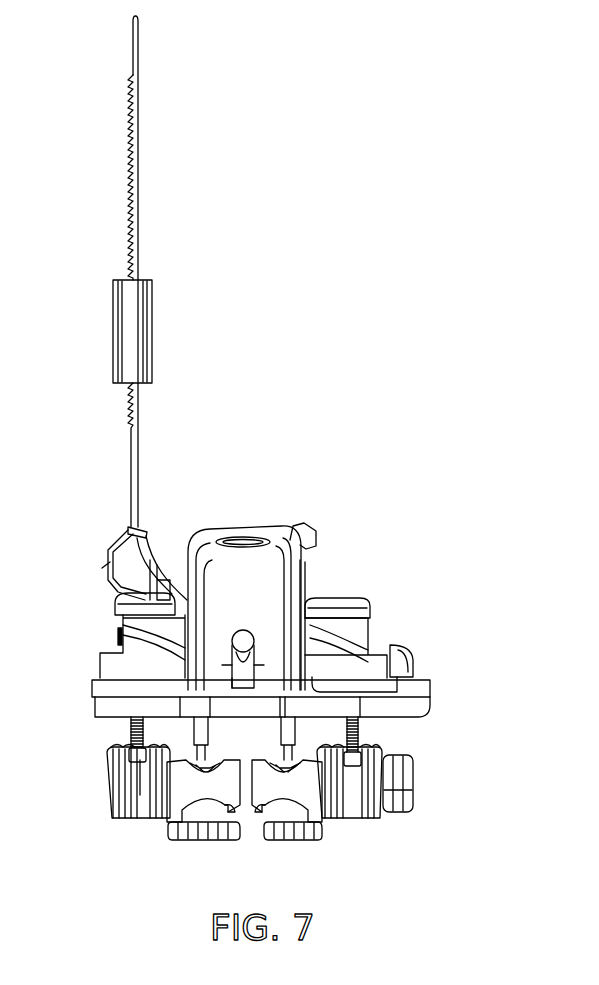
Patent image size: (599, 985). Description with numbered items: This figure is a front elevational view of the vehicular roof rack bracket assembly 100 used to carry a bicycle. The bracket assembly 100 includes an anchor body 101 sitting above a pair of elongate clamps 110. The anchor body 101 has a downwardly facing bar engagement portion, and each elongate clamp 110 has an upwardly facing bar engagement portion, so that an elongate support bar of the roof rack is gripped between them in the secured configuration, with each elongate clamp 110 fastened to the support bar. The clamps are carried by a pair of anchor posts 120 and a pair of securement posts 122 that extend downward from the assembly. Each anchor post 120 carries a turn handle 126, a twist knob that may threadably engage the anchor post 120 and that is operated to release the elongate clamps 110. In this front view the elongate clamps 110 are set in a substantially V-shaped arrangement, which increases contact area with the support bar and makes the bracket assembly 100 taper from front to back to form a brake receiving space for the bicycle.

The bracket assembly 100 is at (292, 443).
The anchor body 101 is at (463, 503).
The securement post 122 is at (130, 707).
The anchor post 120 is at (140, 748).
The turn handle 126 is at (188, 836).
The elongate clamp 110 is at (378, 815).